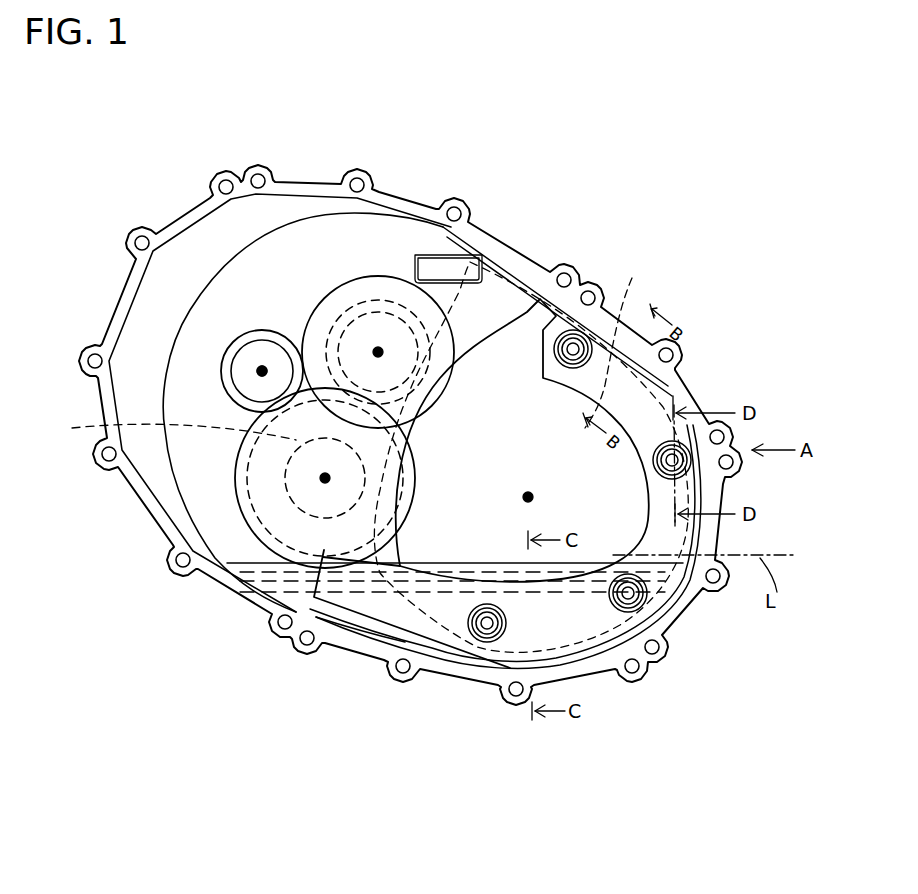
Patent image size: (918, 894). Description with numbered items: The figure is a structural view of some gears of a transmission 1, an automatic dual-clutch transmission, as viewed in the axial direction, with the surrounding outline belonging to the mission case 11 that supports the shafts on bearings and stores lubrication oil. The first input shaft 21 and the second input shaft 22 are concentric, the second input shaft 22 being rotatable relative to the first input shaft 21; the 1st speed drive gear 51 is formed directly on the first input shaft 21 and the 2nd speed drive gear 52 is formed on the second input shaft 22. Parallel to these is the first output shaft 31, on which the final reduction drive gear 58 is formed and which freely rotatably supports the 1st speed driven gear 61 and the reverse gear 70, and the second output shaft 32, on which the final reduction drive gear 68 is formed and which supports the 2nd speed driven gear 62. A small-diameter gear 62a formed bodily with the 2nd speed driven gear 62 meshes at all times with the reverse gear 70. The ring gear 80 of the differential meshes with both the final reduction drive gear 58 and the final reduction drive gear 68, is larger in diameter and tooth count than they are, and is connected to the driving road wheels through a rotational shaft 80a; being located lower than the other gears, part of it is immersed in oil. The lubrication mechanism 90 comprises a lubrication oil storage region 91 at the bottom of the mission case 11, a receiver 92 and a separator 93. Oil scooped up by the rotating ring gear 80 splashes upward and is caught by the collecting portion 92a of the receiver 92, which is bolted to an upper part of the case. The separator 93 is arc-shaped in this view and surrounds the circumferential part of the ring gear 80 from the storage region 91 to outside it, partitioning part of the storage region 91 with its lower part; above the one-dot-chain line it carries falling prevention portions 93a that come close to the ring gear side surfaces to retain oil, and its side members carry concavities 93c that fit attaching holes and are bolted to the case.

The transmission 1 is at (653, 201).
The mission case 11 is at (192, 212).
The first input shaft 21 is at (262, 371).
The second input shaft 22 is at (158, 315).
The first output shaft 31 is at (323, 480).
The second output shaft 32 is at (378, 346).
The 1st speed drive gear 51 is at (233, 388).
The 2nd speed drive gear 52 is at (224, 368).
The final reduction drive gear 58 is at (288, 478).
The 1st speed driven gear 61 is at (240, 486).
The 2nd speed driven gear 62 is at (320, 298).
The small-diameter gear 62a is at (336, 300).
The final reduction drive gear 68 is at (423, 252).
The reverse gear 70 is at (170, 427).
The ring gear 80 is at (305, 555).
The rotational shaft 80a is at (527, 497).
The lubrication mechanism 90 is at (722, 388).
The lubrication oil storage region 91 is at (363, 630).
The receiver 92 is at (480, 268).
The collecting portion 92a is at (443, 277).
The separator 93 is at (673, 384).
The falling prevention portions 93a is at (632, 278).
The concavities 93c is at (572, 330).